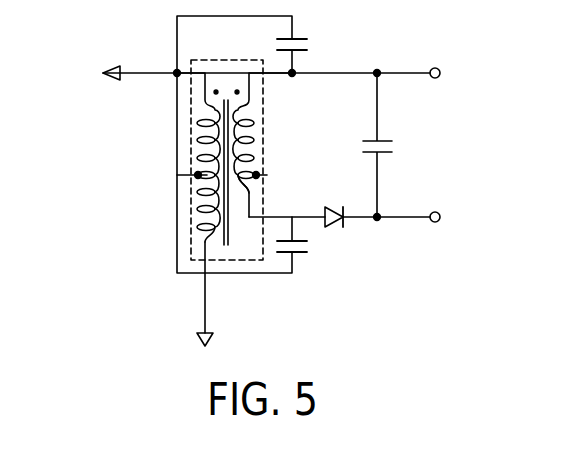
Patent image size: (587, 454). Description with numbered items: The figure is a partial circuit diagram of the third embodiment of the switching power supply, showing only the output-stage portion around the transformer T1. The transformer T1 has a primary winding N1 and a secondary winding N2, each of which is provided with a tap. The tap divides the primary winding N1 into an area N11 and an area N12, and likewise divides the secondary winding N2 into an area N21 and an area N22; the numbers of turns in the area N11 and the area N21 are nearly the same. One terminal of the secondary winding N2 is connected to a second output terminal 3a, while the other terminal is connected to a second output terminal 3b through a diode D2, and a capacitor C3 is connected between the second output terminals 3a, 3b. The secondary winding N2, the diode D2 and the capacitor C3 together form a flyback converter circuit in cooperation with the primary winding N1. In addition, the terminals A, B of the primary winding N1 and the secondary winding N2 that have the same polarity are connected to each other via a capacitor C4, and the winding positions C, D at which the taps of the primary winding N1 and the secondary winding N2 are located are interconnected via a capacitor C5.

The transformer T1 is at (215, 60).
The primary winding N1 is at (183, 157).
The area N11 of the primary winding N11 is at (167, 149).
The area N12 of the primary winding N12 is at (161, 204).
The secondary winding N2 is at (270, 145).
The area N21 of the secondary winding N21 is at (282, 141).
The area N22 of the secondary winding N22 is at (297, 178).
The terminal (A) of the primary winding A is at (172, 71).
The terminal (B) of the secondary winding B is at (297, 70).
The winding position (C) of the primary winding tap C is at (192, 180).
The winding position (D) of the secondary winding tap D is at (262, 182).
The capacitor C3 is at (391, 145).
The capacitor C4 is at (302, 26).
The capacitor C5 is at (304, 265).
The diode D2 is at (348, 235).
The second output terminal 3a is at (440, 68).
The second output terminal 3b is at (440, 222).